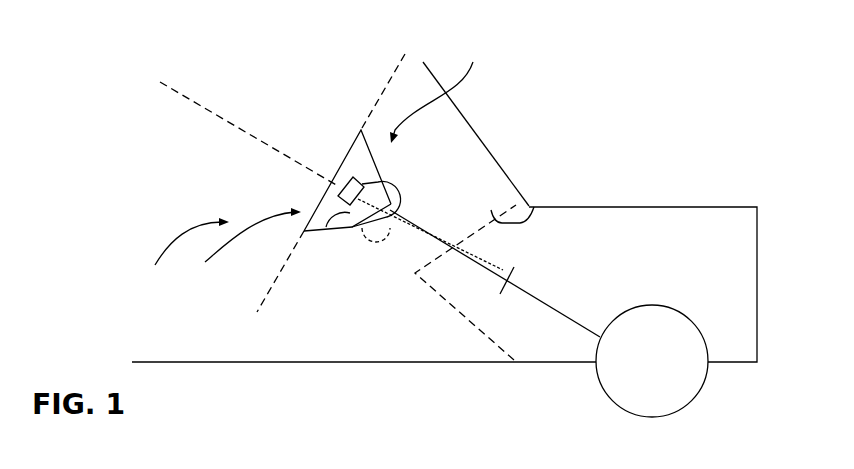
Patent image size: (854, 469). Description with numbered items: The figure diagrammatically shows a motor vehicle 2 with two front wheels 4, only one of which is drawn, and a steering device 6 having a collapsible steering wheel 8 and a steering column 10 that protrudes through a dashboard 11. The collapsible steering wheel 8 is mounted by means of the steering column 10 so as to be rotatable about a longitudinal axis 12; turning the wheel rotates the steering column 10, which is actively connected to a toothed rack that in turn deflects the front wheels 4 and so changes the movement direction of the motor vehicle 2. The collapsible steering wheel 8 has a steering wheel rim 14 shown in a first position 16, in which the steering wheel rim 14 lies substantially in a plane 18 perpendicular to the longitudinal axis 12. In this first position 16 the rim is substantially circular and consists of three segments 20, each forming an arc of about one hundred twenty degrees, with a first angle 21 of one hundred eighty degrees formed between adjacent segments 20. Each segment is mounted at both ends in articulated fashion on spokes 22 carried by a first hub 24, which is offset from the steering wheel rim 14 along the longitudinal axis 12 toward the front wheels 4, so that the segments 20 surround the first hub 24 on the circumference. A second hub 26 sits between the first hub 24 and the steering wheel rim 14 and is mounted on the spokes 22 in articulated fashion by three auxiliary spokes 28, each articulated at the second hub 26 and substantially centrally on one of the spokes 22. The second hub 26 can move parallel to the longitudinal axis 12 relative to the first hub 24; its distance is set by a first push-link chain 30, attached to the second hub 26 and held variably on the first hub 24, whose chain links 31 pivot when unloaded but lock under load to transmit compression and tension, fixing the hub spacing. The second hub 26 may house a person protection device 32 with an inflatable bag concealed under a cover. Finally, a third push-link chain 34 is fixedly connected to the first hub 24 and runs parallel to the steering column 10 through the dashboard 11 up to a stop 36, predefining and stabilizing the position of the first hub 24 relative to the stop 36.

The motor vehicle 2 is at (705, 207).
The front wheels 4 is at (655, 365).
The steering device 6 is at (440, 88).
The collapsible steering wheel 8 is at (336, 226).
The steering column 10 is at (553, 308).
The dashboard 11 is at (537, 205).
The longitudinal axis 12 is at (213, 112).
The steering wheel rim 14 is at (345, 152).
The first position 16 is at (169, 243).
The plane 18 is at (394, 77).
The segments 20 is at (337, 193).
The first angle 21 is at (226, 246).
The spokes 22 is at (368, 125).
The first hub 24 is at (393, 204).
The second hub 26 is at (353, 177).
The auxiliary spokes 28 is at (392, 185).
The first push-link chain 30 is at (381, 240).
The chain links 31 is at (377, 242).
The person protection device 32 is at (325, 190).
The third push-link chain 34 is at (497, 215).
The stop 36 is at (504, 296).